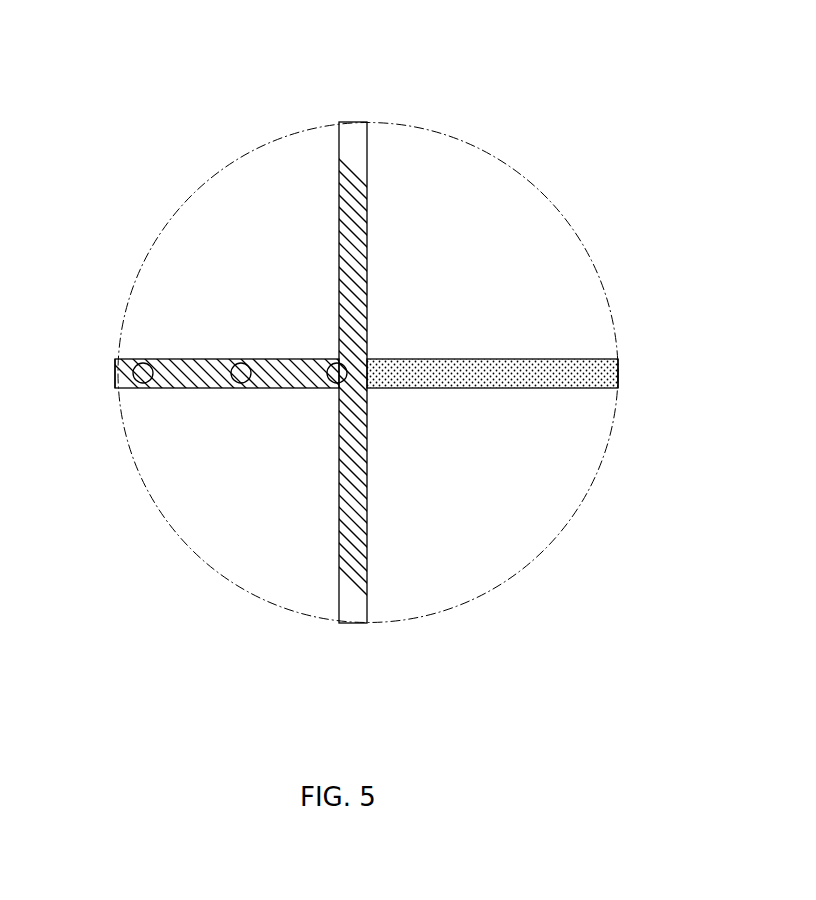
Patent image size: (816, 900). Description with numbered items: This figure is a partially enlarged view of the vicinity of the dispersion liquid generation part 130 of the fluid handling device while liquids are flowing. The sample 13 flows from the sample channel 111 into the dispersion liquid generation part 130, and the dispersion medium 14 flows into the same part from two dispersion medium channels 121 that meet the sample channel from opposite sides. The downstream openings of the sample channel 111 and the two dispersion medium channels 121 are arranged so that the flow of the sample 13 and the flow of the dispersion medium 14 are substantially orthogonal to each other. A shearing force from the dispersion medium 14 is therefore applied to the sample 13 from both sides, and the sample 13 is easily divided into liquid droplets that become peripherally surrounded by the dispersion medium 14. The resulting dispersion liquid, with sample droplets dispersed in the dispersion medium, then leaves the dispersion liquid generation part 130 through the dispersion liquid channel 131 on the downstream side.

The sample 13 is at (120, 388).
The dispersion medium 14 is at (339, 122).
The sample channel 111 is at (580, 357).
The dispersion medium channels 121 is at (367, 173).
The dispersion liquid generation part 130 is at (335, 360).
The dispersion liquid channel 131 is at (200, 394).